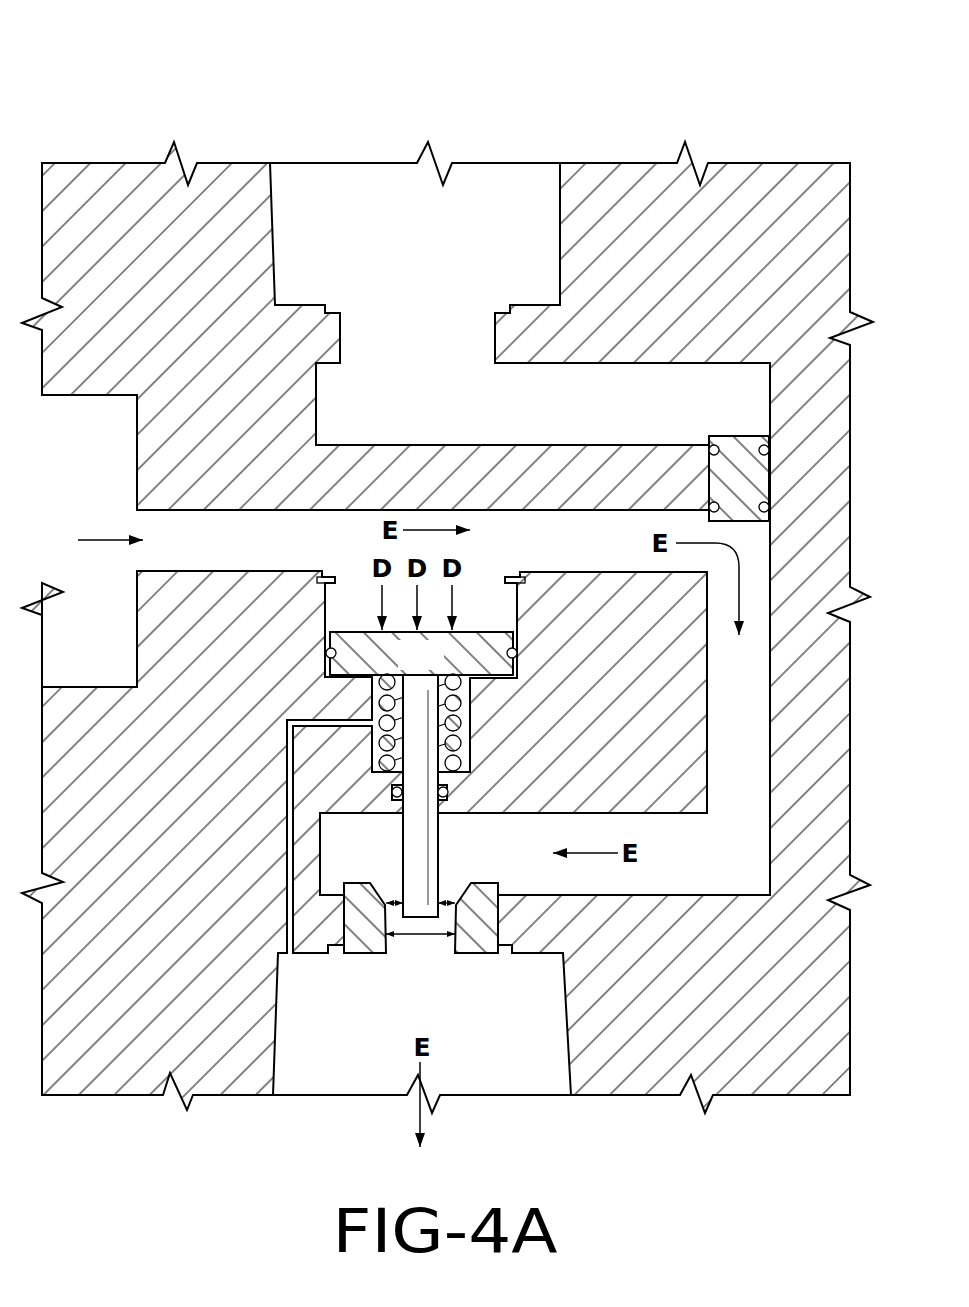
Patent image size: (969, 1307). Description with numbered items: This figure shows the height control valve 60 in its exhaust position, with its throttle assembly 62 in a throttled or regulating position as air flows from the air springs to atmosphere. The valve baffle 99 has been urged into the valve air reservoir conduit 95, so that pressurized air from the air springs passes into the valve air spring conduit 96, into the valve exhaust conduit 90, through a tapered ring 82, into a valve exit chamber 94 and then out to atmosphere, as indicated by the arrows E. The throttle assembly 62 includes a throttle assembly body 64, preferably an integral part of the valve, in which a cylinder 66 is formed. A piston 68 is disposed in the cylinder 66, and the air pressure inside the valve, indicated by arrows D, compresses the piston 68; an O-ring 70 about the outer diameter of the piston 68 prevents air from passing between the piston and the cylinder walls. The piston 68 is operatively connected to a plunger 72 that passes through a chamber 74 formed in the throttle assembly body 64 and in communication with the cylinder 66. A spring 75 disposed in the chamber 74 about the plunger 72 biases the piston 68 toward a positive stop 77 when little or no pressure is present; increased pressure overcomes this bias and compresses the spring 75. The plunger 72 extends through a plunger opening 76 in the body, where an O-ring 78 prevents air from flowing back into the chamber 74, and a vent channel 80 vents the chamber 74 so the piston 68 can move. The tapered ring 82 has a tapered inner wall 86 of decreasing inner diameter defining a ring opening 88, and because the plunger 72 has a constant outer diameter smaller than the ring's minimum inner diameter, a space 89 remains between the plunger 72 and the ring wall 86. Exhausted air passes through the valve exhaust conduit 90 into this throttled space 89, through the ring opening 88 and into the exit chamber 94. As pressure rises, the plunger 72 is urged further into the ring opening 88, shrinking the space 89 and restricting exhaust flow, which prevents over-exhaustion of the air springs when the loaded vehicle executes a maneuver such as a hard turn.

The height control valve 60 is at (118, 125).
The throttle assembly 62 is at (335, 955).
The throttle assembly body 64 is at (126, 780).
The cylinder 66 is at (330, 596).
The piston 68 is at (403, 670).
The O-ring 70 is at (515, 656).
The plunger 72 is at (417, 735).
The chamber 74 is at (468, 728).
The spring 75 is at (462, 700).
The plunger opening 76 is at (405, 805).
The positive stop 77 is at (513, 596).
The O-ring 78 is at (444, 800).
The vent channel 80 is at (288, 848).
The tapered ring 82 is at (372, 906).
The tapered inner wall 86 is at (360, 957).
The ring opening 88 is at (416, 941).
The space 89 is at (384, 899).
The valve exhaust conduit 90 is at (725, 740).
The valve exit chamber 94 is at (470, 1080).
The valve air reservoir conduit 95 is at (516, 420).
The valve air spring conduit 96 is at (178, 555).
The valve baffle 99 is at (731, 438).